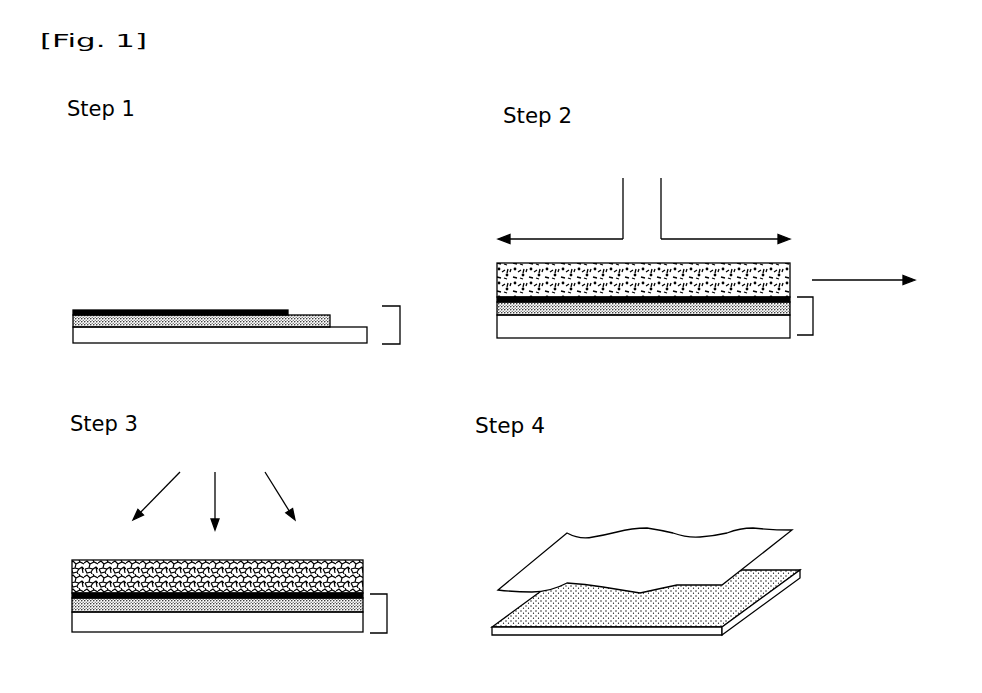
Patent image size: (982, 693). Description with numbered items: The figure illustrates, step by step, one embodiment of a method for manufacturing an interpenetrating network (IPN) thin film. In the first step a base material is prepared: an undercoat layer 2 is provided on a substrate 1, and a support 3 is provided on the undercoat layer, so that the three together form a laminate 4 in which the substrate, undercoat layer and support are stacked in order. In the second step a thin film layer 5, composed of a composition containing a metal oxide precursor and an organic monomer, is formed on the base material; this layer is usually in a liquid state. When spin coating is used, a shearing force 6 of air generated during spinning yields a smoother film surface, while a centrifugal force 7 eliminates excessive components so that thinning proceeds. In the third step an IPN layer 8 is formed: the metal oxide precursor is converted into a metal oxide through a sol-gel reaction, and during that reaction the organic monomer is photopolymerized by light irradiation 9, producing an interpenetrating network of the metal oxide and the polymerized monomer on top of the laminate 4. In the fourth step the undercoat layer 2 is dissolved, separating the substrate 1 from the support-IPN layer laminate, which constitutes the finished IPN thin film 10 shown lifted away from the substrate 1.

The substrate 1 is at (700, 653).
The undercoat layer 2 is at (431, 422).
The support 3 is at (431, 436).
The laminate of substrate, undercoat layer and support 4 is at (604, 465).
The thin film layer 5 is at (497, 277).
The shearing force of air 6 is at (644, 211).
The centrifugal force 7 is at (863, 268).
The IPN layer 8 is at (365, 577).
The light irradiation 9 is at (214, 484).
The IPN thin film 10 is at (682, 538).